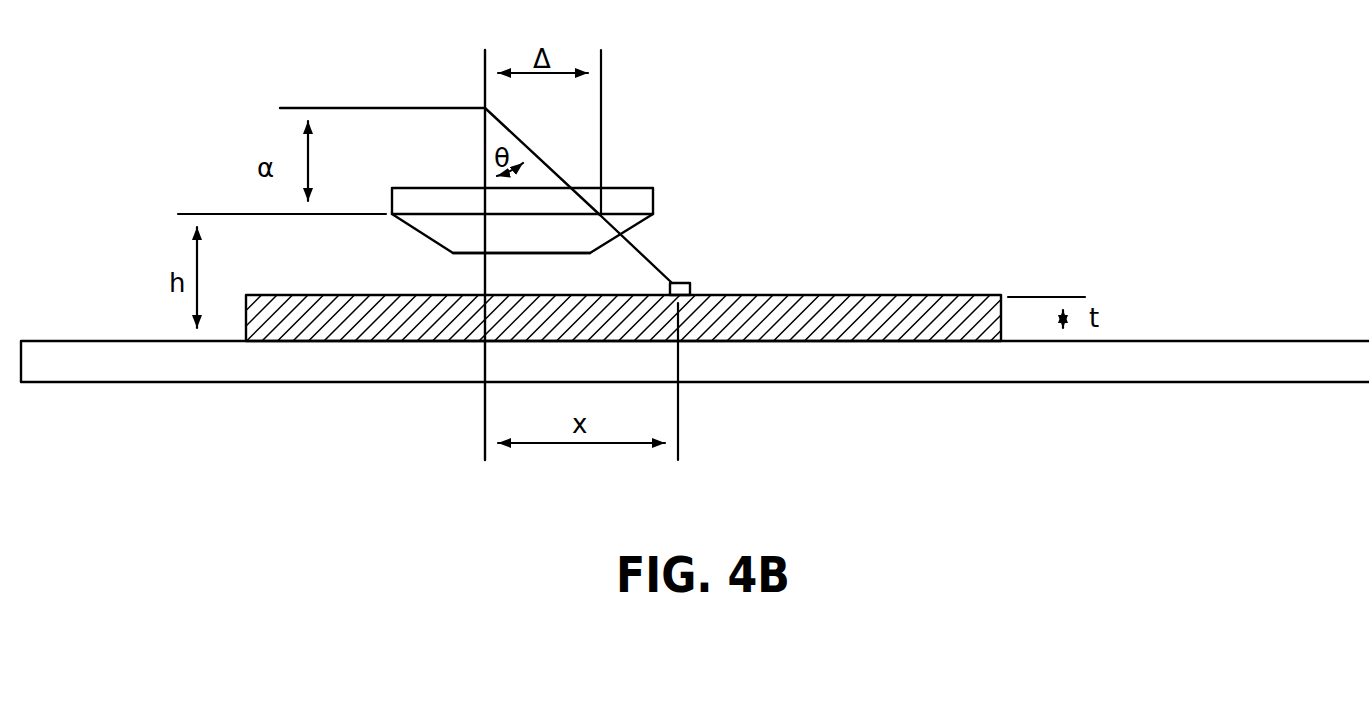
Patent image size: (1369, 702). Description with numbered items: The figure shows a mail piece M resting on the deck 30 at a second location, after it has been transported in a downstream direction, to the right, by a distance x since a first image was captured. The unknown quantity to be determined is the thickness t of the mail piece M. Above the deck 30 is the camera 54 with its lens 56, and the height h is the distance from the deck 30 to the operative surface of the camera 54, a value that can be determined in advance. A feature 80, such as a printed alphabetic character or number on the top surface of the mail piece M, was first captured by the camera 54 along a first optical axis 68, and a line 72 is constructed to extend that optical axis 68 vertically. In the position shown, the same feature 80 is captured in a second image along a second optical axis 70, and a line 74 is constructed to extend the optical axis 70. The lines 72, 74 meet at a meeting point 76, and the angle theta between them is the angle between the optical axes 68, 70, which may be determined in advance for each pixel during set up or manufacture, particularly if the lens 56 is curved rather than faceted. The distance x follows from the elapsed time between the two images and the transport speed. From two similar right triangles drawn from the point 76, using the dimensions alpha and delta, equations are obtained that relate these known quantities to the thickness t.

The deck 30 is at (1283, 343).
The camera 54 is at (390, 203).
The lens 56 is at (420, 232).
The first optical axis 68 is at (485, 270).
The second optical axis 70 is at (644, 257).
The line extending the first optical axis 72 is at (485, 203).
The line extending the second optical axis 74 is at (553, 170).
The meeting point 76 is at (485, 108).
The feature 80 is at (683, 282).
The mail piece M is at (945, 297).